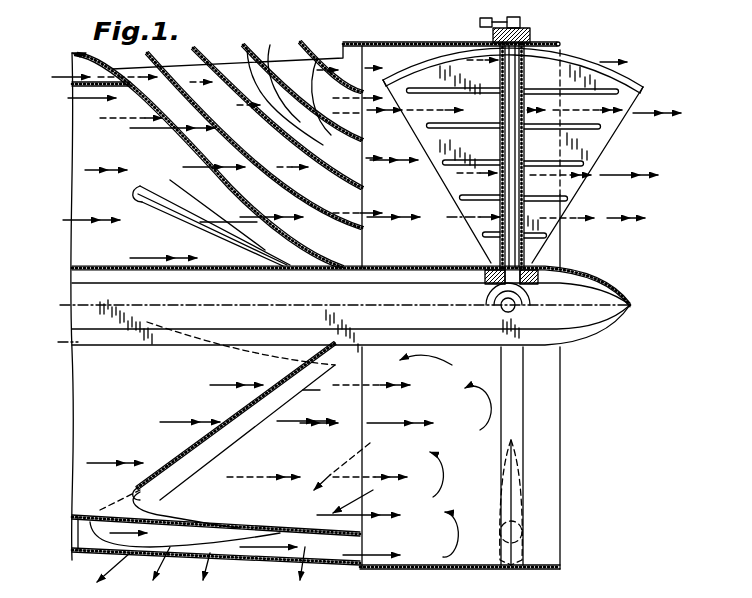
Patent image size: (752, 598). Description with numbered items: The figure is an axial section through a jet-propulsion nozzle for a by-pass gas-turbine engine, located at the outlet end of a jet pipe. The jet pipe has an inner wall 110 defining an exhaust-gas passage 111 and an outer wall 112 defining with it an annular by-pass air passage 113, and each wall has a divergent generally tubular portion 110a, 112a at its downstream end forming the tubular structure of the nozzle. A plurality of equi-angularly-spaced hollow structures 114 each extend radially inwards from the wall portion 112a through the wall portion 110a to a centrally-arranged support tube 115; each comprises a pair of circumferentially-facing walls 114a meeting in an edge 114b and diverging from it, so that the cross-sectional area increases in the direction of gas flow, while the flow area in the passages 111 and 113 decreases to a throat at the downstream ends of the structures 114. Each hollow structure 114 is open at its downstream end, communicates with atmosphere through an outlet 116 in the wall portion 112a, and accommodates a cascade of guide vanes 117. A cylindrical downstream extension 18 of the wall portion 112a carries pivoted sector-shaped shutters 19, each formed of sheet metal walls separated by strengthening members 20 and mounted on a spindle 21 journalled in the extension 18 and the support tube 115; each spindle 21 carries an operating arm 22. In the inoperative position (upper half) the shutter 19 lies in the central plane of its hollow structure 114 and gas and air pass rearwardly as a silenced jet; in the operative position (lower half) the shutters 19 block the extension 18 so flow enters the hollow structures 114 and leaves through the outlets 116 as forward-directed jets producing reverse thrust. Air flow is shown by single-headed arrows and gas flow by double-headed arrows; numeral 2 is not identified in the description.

The engine nacelle 2 is at (664, 307).
The cylindrical downstream extension 18 is at (393, 43).
The pivoted shutter 19 is at (600, 147).
The strengthening members 20 is at (583, 92).
The spindle 21 is at (505, 73).
The operating arm 22 is at (480, 22).
The inner wall 110 is at (85, 520).
The divergent tubular portion of inner wall 110a is at (298, 538).
The exhaust-gas passage 111 is at (110, 412).
The outer wall 112 is at (178, 132).
The divergent tubular portion of outer wall 112a is at (240, 553).
The by-pass air passage 113 is at (92, 63).
The hollow structure 114 is at (153, 203).
The circumferentially-facing walls 114a is at (178, 205).
The edge 114b is at (210, 193).
The support tube 115 is at (97, 323).
The outlet 116 is at (339, 49).
The cascade of guide vanes 117 is at (302, 106).